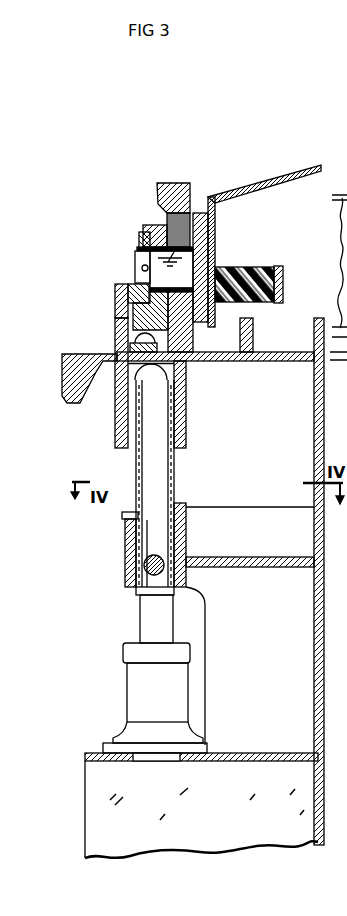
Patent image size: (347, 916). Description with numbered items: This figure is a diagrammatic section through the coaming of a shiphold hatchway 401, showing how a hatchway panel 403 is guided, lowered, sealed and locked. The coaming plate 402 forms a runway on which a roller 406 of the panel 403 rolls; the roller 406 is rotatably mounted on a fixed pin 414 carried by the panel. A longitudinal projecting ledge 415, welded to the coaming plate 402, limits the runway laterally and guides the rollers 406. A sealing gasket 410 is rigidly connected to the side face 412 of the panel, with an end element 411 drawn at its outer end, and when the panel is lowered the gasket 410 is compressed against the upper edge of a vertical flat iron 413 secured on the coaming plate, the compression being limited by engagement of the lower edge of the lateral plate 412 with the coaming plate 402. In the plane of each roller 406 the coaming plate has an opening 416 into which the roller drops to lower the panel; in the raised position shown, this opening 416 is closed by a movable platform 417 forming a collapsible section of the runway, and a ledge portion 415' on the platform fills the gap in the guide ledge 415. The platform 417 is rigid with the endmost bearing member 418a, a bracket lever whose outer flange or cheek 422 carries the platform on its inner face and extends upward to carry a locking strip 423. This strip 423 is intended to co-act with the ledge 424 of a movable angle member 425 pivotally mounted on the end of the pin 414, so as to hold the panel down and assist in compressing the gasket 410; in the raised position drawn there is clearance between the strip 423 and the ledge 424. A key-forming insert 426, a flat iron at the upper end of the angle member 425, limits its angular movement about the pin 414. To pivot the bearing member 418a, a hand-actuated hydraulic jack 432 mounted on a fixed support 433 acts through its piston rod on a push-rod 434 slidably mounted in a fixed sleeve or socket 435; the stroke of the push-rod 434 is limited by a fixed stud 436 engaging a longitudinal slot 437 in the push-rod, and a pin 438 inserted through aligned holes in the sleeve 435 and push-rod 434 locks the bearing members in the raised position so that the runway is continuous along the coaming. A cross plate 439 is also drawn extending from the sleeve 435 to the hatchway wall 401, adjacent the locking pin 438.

The shiphold hatchway 401 is at (314, 471).
The coaming plate 402 is at (64, 368).
The hatchway panel 403 is at (256, 170).
The roller 406 is at (166, 183).
The sealing gasket 410 is at (272, 276).
The end cap 411 is at (283, 293).
The side face 412 is at (214, 235).
The flat iron 413 is at (252, 327).
The fixed pin 414 is at (196, 215).
The longitudinal projecting strip or ledge 415 is at (82, 352).
The ledge portion 415' is at (191, 409).
The opening 416 is at (113, 358).
The movable platform 417 is at (187, 364).
The endmost bearing member 418a is at (110, 408).
The outer flange or cheek 422 is at (151, 231).
The locking strip 423 is at (155, 286).
The ledge or flange 424 is at (116, 284).
The movable angle member 425 is at (149, 227).
The key-forming insert 426 is at (116, 285).
The hydraulic jack 432 is at (157, 682).
The fixed support 433 is at (125, 757).
The push-rod 434 is at (143, 551).
The sleeve or socket 435 is at (132, 540).
The fixed stud or pin 436 is at (124, 518).
The longitudinal slot 437 is at (137, 472).
The pin 438 is at (170, 573).
The cross plate 439 is at (160, 566).